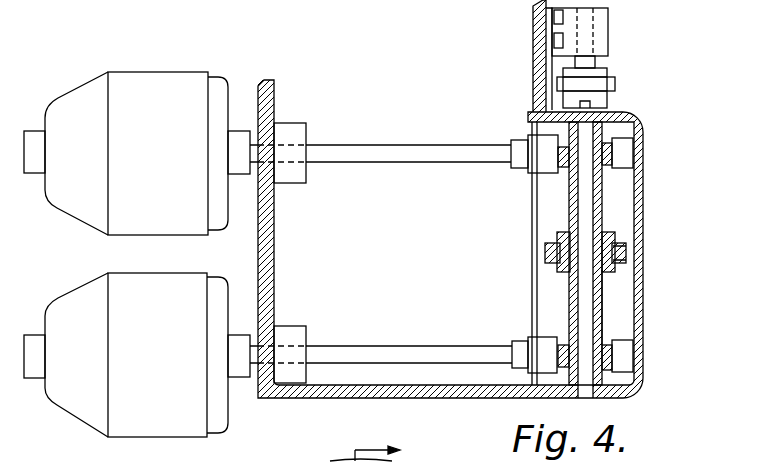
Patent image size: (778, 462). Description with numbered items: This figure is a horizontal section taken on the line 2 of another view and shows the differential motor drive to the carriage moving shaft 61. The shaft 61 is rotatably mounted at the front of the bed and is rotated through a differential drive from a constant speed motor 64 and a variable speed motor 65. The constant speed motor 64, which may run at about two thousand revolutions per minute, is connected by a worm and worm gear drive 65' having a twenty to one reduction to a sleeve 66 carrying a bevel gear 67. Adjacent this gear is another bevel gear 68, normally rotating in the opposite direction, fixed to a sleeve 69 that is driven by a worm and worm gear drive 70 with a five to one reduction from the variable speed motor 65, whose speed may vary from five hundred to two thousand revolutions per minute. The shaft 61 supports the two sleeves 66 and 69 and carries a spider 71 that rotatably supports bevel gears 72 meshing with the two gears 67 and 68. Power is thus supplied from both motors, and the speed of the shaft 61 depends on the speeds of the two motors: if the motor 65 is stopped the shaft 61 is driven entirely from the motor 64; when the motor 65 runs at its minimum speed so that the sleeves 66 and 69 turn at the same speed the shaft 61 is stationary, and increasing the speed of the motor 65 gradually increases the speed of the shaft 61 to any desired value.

The section line 2 is at (375, 448).
The shaft 61 is at (583, 209).
The constant speed motor 64 is at (80, 205).
The variable speed motor 65 is at (137, 348).
The worm and worm gear drive 65' is at (521, 174).
The sleeve 66 is at (603, 186).
The bevel gear 67 is at (607, 230).
The bevel gear 68 is at (605, 277).
The sleeve 69 is at (600, 317).
The worm and worm gear drive 70 is at (635, 362).
The spider 71 is at (620, 262).
The bevel gears 72 is at (614, 246).